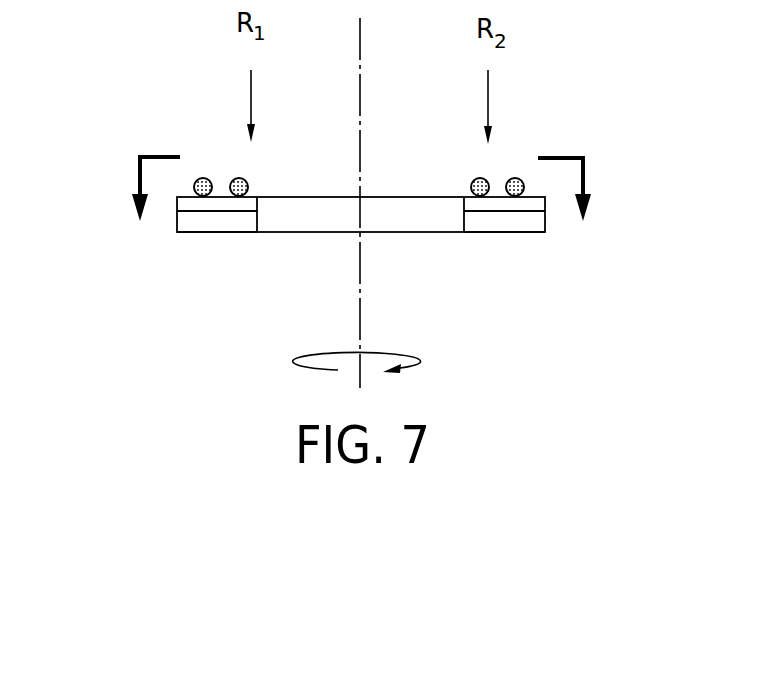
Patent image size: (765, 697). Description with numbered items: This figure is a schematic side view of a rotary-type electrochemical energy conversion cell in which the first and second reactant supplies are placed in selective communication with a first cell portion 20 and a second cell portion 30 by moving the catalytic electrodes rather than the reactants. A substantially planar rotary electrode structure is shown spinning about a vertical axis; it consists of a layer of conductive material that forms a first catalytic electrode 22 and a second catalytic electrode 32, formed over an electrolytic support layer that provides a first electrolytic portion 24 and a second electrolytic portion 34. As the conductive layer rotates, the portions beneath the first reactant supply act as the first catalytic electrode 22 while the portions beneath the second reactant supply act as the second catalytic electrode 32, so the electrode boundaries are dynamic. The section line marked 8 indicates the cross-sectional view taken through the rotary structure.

The section line 8- 8 is at (329, 207).
The first cell portion 20 is at (162, 139).
The first catalytic electrode 22 is at (197, 206).
The first electrolytic portion 24 is at (237, 225).
The second cell portion 30 is at (562, 138).
The second catalytic electrode 32 is at (528, 212).
The second electrolytic portion 34 is at (490, 225).